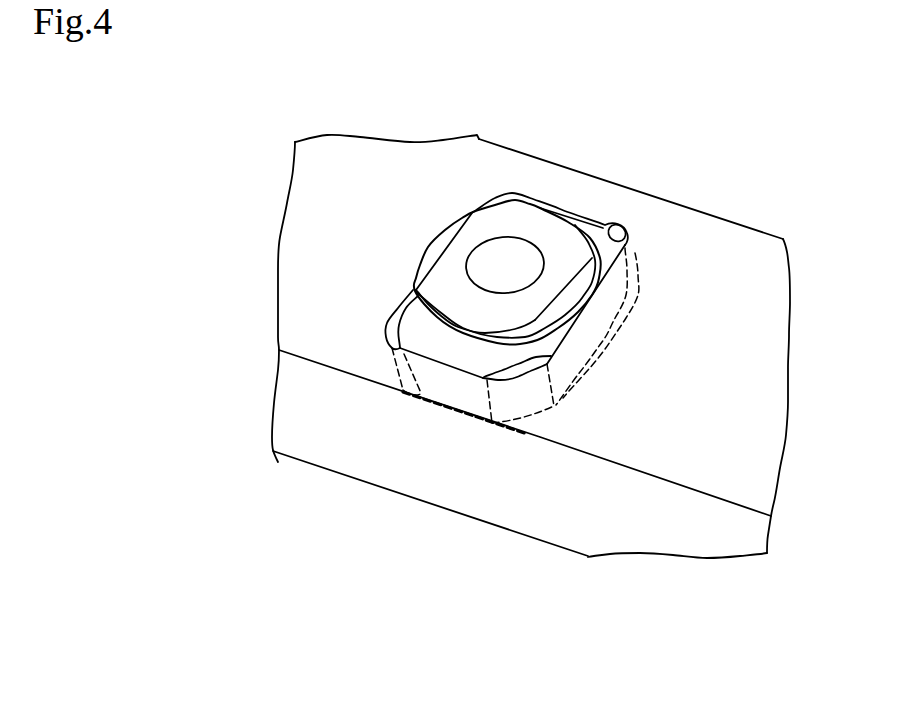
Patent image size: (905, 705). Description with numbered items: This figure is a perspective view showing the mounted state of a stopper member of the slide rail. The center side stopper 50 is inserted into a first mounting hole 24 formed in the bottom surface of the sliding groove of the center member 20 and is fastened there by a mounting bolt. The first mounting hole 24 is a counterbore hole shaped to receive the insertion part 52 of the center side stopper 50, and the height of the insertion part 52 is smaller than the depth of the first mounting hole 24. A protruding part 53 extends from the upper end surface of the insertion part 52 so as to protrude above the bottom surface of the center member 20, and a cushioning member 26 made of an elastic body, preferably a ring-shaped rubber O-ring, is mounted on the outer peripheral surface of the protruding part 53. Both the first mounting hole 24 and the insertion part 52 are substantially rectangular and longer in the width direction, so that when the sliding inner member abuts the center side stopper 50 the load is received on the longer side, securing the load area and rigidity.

The center member 20 is at (730, 252).
The first mounting hole 24 is at (628, 240).
The cushioning member 26 is at (468, 340).
The center side stopper 50 is at (525, 94).
The insertion part 52 is at (585, 213).
The protruding part 53 is at (542, 223).